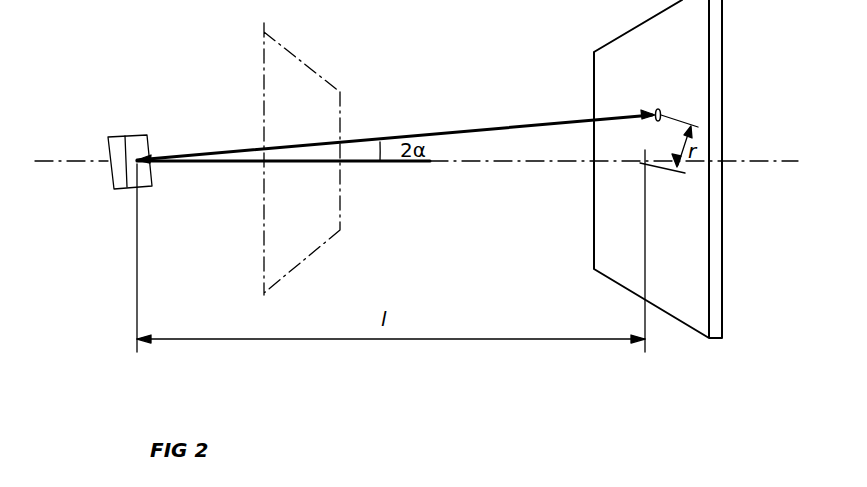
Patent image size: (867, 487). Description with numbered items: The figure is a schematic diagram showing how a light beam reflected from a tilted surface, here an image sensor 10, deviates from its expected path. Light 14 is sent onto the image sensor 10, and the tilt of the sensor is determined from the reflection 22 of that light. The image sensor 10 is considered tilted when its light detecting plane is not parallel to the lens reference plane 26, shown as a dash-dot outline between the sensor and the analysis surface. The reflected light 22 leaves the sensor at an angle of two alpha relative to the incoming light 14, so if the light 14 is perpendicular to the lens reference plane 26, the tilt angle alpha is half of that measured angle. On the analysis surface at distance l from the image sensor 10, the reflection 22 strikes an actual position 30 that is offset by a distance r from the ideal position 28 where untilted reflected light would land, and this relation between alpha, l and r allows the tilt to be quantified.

The image sensor 10 is at (112, 176).
The light sent onto the image sensor 14 is at (394, 165).
The reflection of the light 22 is at (557, 123).
The lens reference plane 26 is at (317, 72).
The ideal position of the reflected light 28 is at (645, 162).
The actual position of the reflected light 30 is at (658, 108).